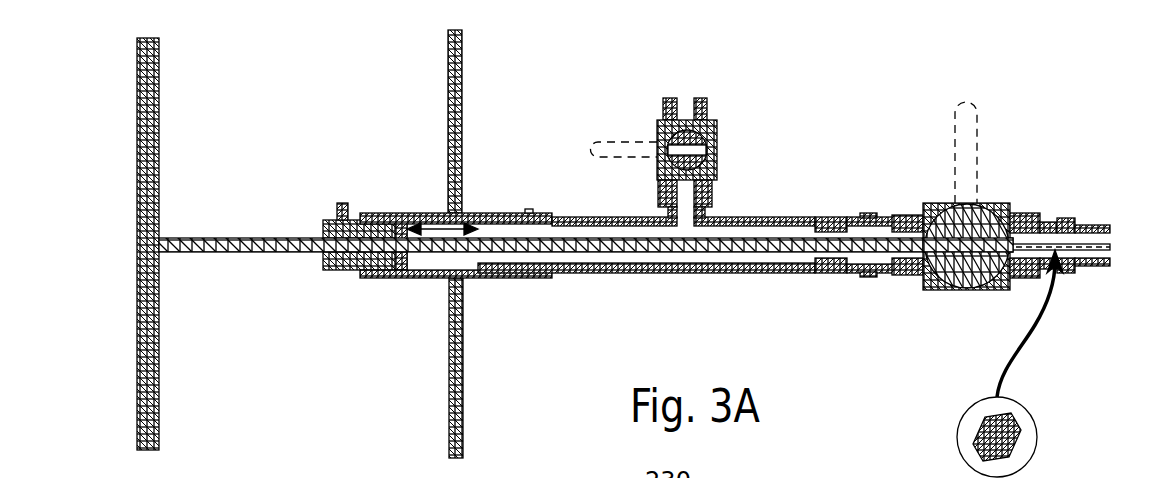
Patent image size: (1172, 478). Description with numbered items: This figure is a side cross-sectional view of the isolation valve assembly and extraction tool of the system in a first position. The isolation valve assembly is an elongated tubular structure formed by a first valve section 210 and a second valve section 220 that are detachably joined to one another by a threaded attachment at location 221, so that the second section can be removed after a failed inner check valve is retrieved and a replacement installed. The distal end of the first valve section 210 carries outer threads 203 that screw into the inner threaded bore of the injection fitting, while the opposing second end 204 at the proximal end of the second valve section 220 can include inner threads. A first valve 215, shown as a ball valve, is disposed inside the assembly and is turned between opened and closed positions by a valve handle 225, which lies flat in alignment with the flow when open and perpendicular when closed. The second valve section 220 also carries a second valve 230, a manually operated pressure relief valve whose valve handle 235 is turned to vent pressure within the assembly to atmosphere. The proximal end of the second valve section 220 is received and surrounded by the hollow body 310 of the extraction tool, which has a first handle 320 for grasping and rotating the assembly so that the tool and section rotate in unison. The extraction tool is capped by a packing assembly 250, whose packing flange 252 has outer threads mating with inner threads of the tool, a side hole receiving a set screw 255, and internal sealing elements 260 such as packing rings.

The outer threads 203 is at (1103, 230).
The second end 204 is at (357, 283).
The first valve section 210 is at (938, 288).
The first valve 215 is at (953, 207).
The second valve section 220 is at (648, 270).
The threaded attachment location 221 is at (832, 225).
The valve handle 225 is at (966, 102).
The second valve 230 is at (687, 125).
The valve handle 235 is at (612, 140).
The packing assembly 250 is at (318, 205).
The packing flange 252 is at (332, 218).
The set screw 255 is at (347, 203).
The internal sealing elements 260 is at (400, 222).
The hollow body 310 is at (514, 280).
The first handle 320 is at (448, 62).